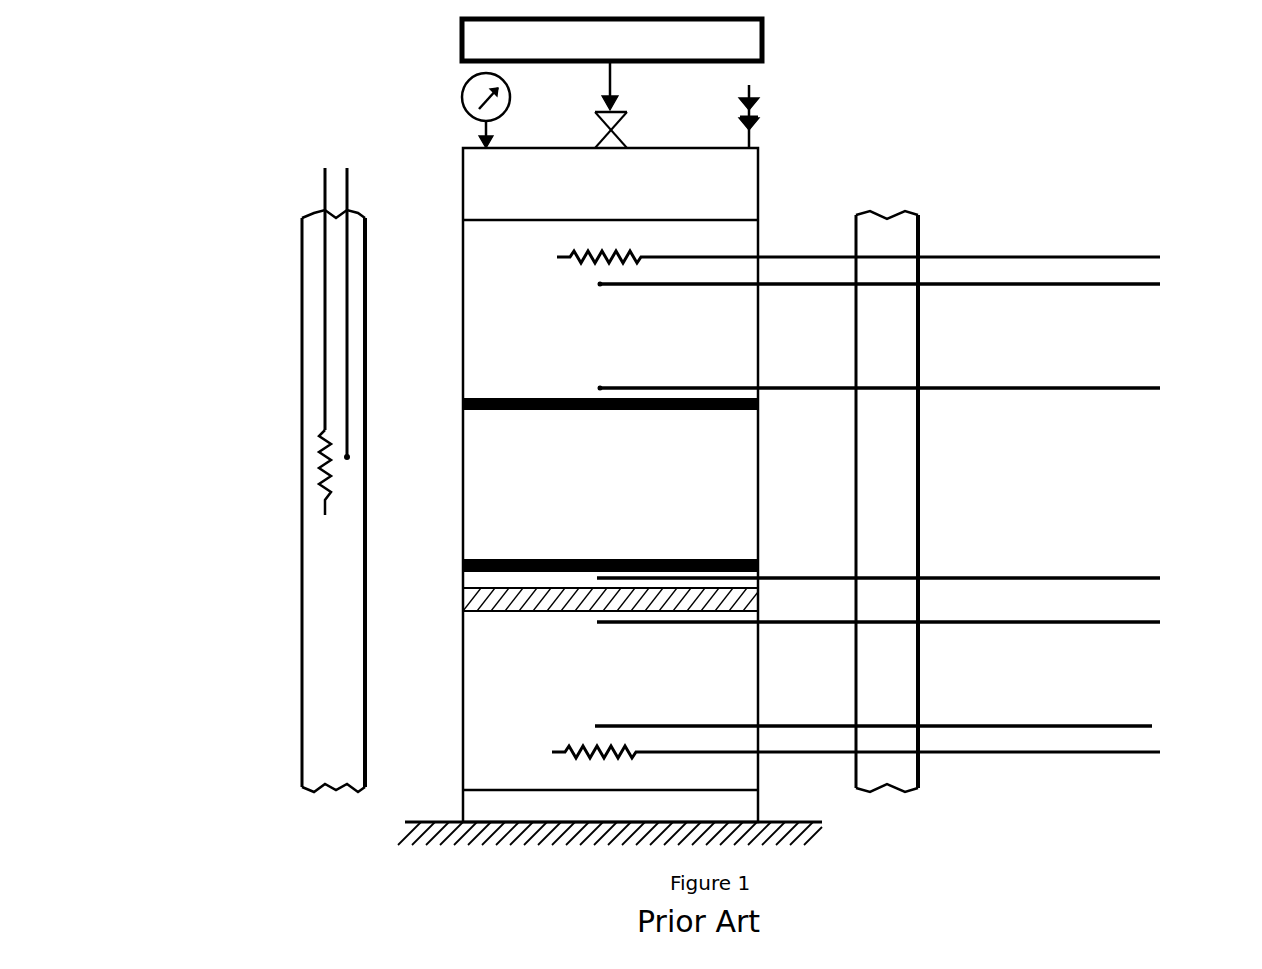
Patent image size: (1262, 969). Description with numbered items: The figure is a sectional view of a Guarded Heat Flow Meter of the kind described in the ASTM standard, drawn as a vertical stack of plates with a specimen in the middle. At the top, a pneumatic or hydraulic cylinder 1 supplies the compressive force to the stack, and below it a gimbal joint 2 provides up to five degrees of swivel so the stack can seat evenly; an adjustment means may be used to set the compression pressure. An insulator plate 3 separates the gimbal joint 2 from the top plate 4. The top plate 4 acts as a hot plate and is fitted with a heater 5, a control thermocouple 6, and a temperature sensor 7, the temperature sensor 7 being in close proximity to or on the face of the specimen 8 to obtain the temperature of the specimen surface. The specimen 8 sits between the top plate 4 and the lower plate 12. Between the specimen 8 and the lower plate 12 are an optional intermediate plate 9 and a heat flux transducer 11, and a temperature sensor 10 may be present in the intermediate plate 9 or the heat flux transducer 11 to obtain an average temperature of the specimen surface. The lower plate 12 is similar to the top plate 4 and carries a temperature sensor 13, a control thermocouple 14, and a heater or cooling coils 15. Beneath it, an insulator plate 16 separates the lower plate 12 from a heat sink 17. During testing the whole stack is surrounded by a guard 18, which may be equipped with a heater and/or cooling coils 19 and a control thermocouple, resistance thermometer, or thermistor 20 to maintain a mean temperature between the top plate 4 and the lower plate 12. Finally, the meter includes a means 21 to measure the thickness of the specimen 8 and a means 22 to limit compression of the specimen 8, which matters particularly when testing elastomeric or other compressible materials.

The pneumatic or hydraulic cylinder 1 is at (476, 38).
The gimbal joint 2 is at (629, 120).
The insulator plate 3 is at (480, 183).
The top plate 4 is at (478, 330).
The heater 5 is at (872, 254).
The control thermocouple 6 is at (893, 290).
The temperature sensor 7 is at (825, 391).
The specimen 8 is at (473, 457).
The intermediate plate 9 is at (475, 578).
The temperature sensor 10 is at (901, 577).
The heat flux transducer 11 is at (475, 599).
The lower plate 12 is at (475, 653).
The temperature sensor 13 is at (901, 623).
The control thermocouple 14 is at (896, 719).
The heater or cooling coils 15 is at (877, 763).
The insulator plate 16 is at (470, 799).
The heat sink 17 is at (402, 833).
The guard 18 is at (312, 638).
The heater and/or cooling coils 19 is at (314, 324).
The control thermocouple, resistance thermometer, or thermistor 20 is at (359, 297).
The means to measure thickness 21 is at (462, 97).
The means to limit compression 22 is at (760, 106).